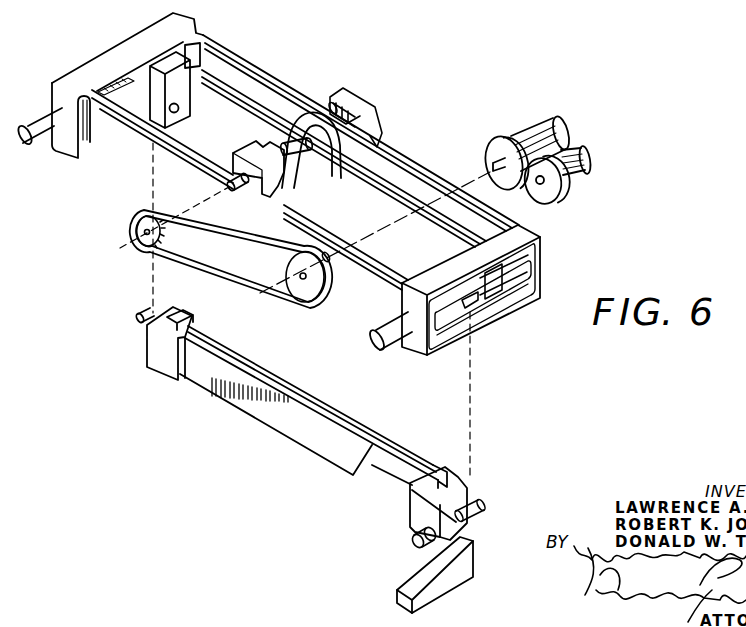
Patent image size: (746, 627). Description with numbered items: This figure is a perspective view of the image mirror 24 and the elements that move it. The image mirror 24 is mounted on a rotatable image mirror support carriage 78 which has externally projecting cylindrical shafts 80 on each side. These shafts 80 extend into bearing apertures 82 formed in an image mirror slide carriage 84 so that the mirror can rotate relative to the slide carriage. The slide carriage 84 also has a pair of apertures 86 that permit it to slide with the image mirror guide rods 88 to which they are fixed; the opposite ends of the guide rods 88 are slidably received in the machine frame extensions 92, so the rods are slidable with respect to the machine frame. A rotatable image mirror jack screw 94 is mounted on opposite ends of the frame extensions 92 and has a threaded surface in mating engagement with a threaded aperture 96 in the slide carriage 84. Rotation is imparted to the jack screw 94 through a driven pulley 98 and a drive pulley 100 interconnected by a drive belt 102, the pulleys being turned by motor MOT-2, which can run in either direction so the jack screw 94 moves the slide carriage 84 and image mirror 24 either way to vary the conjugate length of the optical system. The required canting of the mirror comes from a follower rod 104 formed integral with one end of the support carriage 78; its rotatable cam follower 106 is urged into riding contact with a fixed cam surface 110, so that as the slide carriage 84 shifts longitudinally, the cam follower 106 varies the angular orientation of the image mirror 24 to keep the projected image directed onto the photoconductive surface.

The machine frame extensions 92 is at (199, 26).
The image mirror guide rods 88 is at (100, 118).
The image mirror slide carriage 84 is at (383, 191).
The bearing apertures 82 is at (181, 113).
The image mirror jack screw 94 is at (292, 166).
The threaded aperture 96 is at (316, 153).
The apertures 86 is at (480, 294).
The drive belt 102 is at (205, 273).
The driven pulley 98 is at (168, 236).
The drive pulley 100 is at (284, 262).
The motor MOT- 2 is at (530, 123).
The image mirror support carriage 78 is at (318, 398).
The image mirror 24 is at (282, 414).
The follower rod 104 is at (470, 531).
The cam follower 106 is at (424, 542).
The cylindrical shafts 80 is at (484, 521).
The fixed cam surface 110 is at (418, 588).